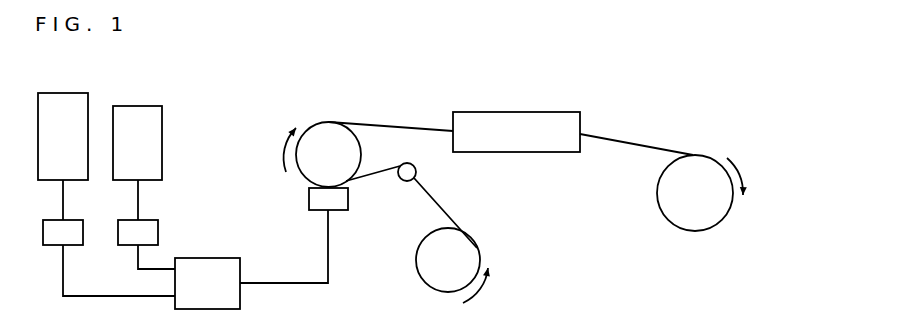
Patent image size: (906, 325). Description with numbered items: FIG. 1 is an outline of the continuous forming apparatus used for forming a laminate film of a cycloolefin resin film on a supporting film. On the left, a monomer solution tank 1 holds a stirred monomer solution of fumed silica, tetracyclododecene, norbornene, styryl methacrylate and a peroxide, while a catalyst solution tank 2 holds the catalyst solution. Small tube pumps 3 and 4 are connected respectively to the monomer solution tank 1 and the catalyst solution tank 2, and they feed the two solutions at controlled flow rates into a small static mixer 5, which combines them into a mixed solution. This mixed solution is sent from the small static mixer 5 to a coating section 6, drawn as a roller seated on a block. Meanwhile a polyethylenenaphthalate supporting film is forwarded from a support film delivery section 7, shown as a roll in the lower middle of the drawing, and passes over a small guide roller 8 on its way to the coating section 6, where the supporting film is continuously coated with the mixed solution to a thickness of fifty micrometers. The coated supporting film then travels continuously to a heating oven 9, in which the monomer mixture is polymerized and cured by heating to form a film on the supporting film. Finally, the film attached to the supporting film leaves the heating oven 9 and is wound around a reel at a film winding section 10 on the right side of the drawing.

The monomer solution tank 1 is at (62, 93).
The catalyst solution tank 2 is at (136, 106).
The small tube pump 3 is at (77, 220).
The small tube pump 4 is at (152, 220).
The small static mixer 5 is at (205, 258).
The coating section 6 is at (310, 199).
The support film delivery section 7 is at (483, 258).
The guide roller 8 is at (437, 195).
The heating oven 9 is at (515, 112).
The film winding section 10 is at (668, 197).